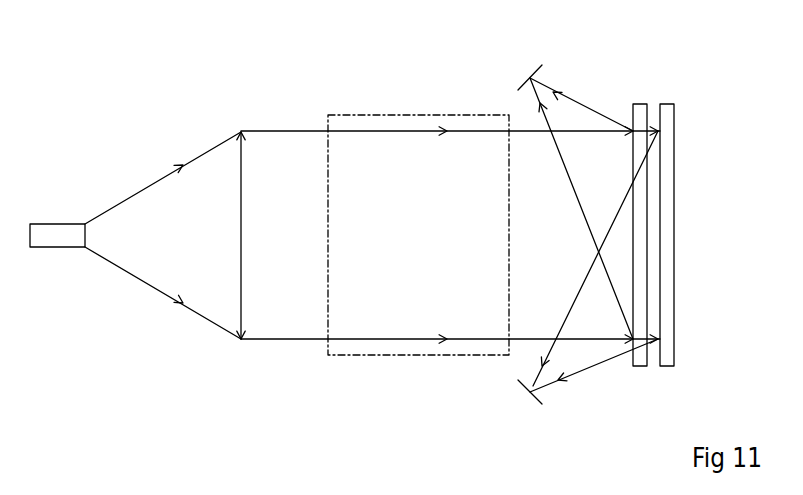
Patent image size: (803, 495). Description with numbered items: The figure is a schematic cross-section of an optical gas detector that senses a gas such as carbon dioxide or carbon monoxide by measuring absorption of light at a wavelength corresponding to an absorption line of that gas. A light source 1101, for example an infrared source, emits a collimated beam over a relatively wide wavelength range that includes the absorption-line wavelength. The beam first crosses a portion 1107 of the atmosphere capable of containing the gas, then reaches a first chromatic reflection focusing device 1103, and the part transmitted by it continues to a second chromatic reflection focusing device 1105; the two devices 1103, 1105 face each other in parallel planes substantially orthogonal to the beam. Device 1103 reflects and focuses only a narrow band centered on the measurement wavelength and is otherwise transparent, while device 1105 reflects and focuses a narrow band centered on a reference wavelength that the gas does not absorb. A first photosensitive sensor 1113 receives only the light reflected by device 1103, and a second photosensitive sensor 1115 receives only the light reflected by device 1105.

The light source 1101 is at (30, 365).
The first chromatic reflection focusing device 1103 is at (642, 103).
The second chromatic reflection focusing device 1105 is at (668, 103).
The portion of the atmosphere 1107 is at (369, 114).
The first photosensitive sensor 1113 is at (531, 65).
The second photosensitive sensor 1115 is at (530, 402).